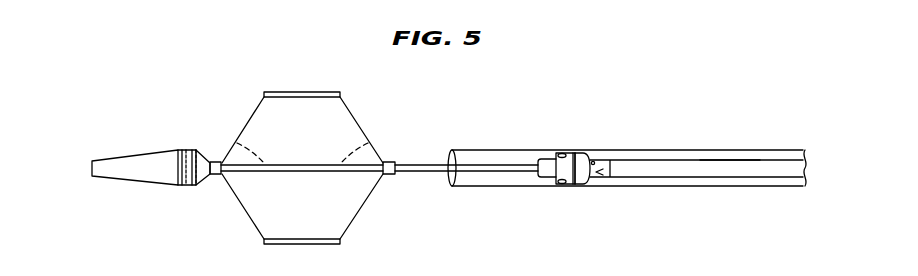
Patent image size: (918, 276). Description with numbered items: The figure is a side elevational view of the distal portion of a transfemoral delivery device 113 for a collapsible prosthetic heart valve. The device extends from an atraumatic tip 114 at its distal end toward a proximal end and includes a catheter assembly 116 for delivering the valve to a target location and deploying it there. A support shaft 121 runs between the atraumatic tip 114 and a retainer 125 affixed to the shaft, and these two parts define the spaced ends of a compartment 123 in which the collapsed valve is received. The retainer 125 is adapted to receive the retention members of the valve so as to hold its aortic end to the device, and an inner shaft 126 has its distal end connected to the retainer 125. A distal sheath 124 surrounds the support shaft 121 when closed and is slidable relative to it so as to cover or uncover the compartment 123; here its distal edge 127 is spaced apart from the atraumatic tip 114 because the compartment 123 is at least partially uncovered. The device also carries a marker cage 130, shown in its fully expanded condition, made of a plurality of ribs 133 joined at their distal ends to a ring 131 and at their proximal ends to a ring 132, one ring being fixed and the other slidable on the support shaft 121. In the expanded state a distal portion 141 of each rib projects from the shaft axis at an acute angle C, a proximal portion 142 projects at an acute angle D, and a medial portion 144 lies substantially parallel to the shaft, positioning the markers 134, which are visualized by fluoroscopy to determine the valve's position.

The transfemoral delivery device 113 is at (164, 92).
The atraumatic tip 114 is at (92, 166).
The catheter assembly 116 is at (625, 173).
The support shaft 121 is at (421, 164).
The compartment 123 is at (507, 151).
The distal sheath 124 is at (661, 150).
The retainer 125 is at (567, 152).
The inner shaft 126 is at (733, 160).
The distal edge 127 is at (452, 149).
The marker cage 130 is at (323, 158).
The ring 131 is at (214, 162).
The ring 132 is at (390, 161).
The ribs 133 is at (239, 210).
The markers 134 is at (328, 92).
The distal portion 141 is at (257, 231).
The proximal portion 142 is at (363, 205).
The medial portion 144 is at (272, 92).
The acute angle C is at (262, 146).
The acute angle D is at (344, 146).